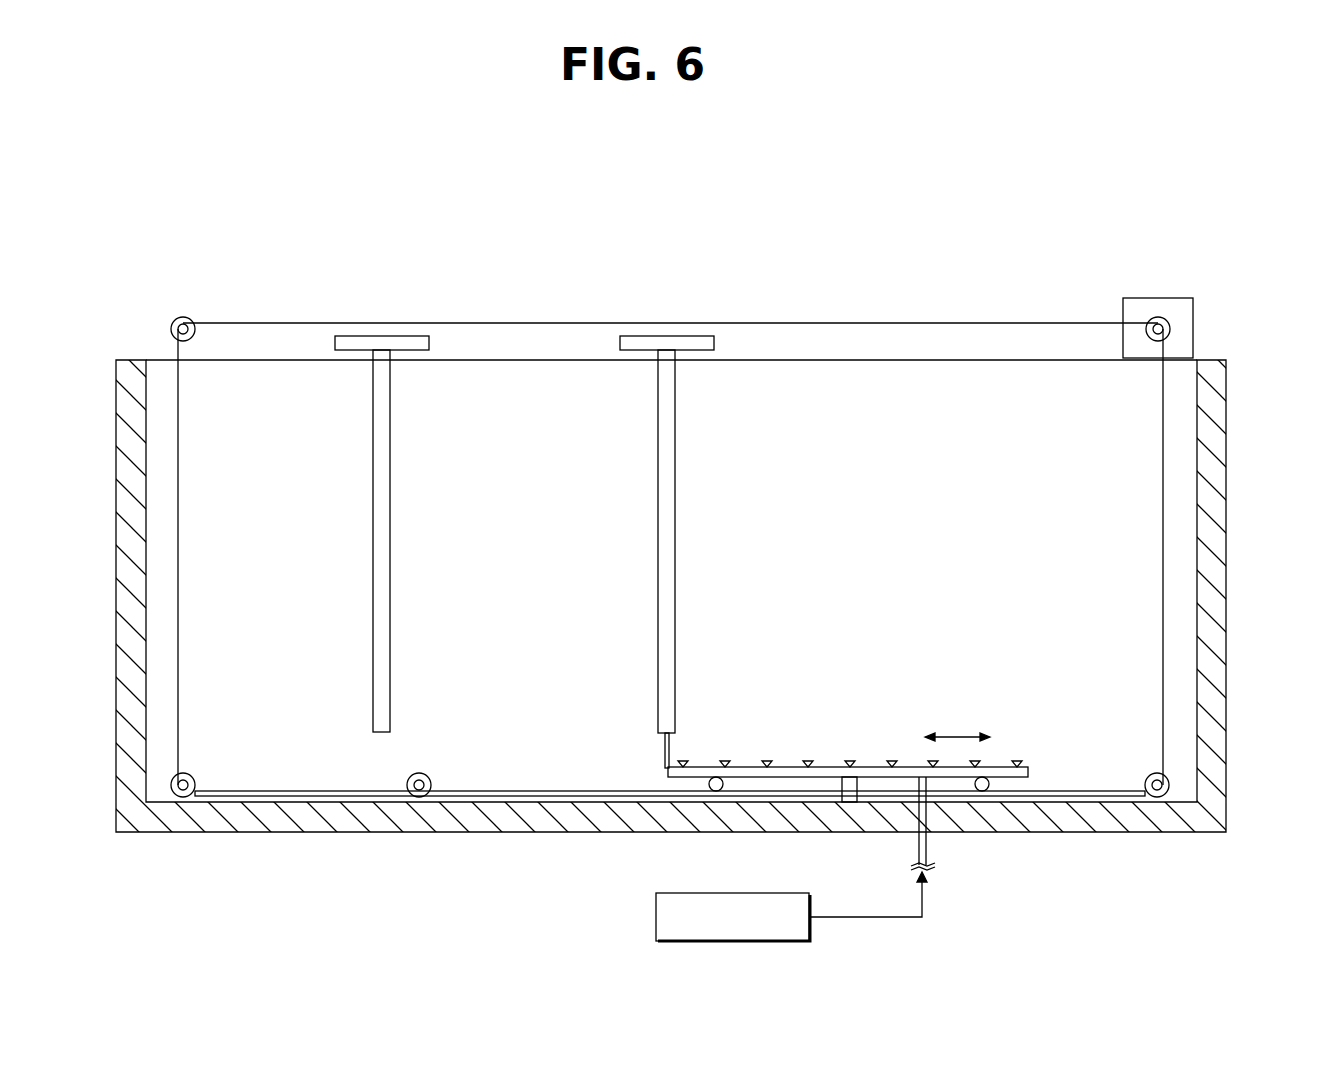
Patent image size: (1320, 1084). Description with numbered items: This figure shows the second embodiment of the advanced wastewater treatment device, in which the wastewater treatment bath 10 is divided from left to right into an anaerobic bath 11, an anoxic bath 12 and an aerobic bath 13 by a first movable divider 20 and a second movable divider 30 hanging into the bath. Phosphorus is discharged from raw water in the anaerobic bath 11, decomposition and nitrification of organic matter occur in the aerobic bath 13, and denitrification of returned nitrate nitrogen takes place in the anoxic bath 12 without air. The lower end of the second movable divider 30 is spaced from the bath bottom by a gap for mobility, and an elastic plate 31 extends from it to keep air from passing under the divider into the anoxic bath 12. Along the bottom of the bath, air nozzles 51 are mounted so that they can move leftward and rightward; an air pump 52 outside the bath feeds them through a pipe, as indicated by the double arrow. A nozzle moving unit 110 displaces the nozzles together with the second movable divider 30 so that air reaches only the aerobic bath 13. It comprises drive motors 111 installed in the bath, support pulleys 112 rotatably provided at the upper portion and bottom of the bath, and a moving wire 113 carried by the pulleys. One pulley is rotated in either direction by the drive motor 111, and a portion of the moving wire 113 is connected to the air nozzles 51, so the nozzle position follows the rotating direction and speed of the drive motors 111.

The wastewater treatment bath 10 is at (1218, 545).
The anaerobic bath 11 is at (286, 601).
The anoxic bath 12 is at (559, 601).
The aerobic bath 13 is at (968, 601).
The first movable divider 20 is at (386, 527).
The second movable divider 30 is at (671, 527).
The elastic plate 31 is at (666, 752).
The air nozzles 51 is at (828, 766).
The air pump 52 is at (655, 917).
The nozzle moving unit 110 is at (1157, 298).
The drive motors 111 is at (1195, 316).
The support pulleys 112 is at (182, 322).
The moving wire 113 is at (953, 322).